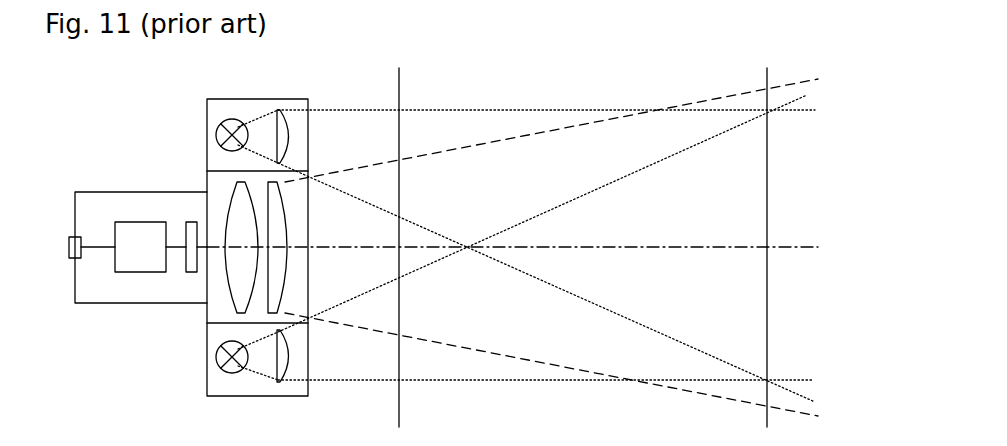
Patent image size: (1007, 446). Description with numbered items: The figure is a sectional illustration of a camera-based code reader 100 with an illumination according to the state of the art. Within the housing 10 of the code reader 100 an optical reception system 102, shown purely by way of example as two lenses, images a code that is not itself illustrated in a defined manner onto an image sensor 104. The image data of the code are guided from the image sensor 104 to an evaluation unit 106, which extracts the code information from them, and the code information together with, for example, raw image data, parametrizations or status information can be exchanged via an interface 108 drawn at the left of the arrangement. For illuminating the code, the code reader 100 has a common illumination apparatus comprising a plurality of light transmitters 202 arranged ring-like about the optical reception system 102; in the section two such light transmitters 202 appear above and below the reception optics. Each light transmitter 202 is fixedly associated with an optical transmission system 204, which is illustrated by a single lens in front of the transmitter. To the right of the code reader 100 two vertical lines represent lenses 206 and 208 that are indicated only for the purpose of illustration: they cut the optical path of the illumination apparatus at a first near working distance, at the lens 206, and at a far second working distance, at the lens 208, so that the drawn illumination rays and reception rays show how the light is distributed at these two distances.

The camera-based code reader 100 is at (108, 130).
The camera housing 10 is at (207, 160).
The optical reception system 102 is at (308, 207).
The image sensor 104 is at (187, 273).
The evaluation unit 106 is at (124, 224).
The interface 108 is at (72, 259).
The light transmitter 202 is at (222, 128).
The optical transmission system 204 is at (287, 137).
The lens (first near working distance) 206 is at (399, 82).
The lens (far second working distance) 208 is at (766, 91).